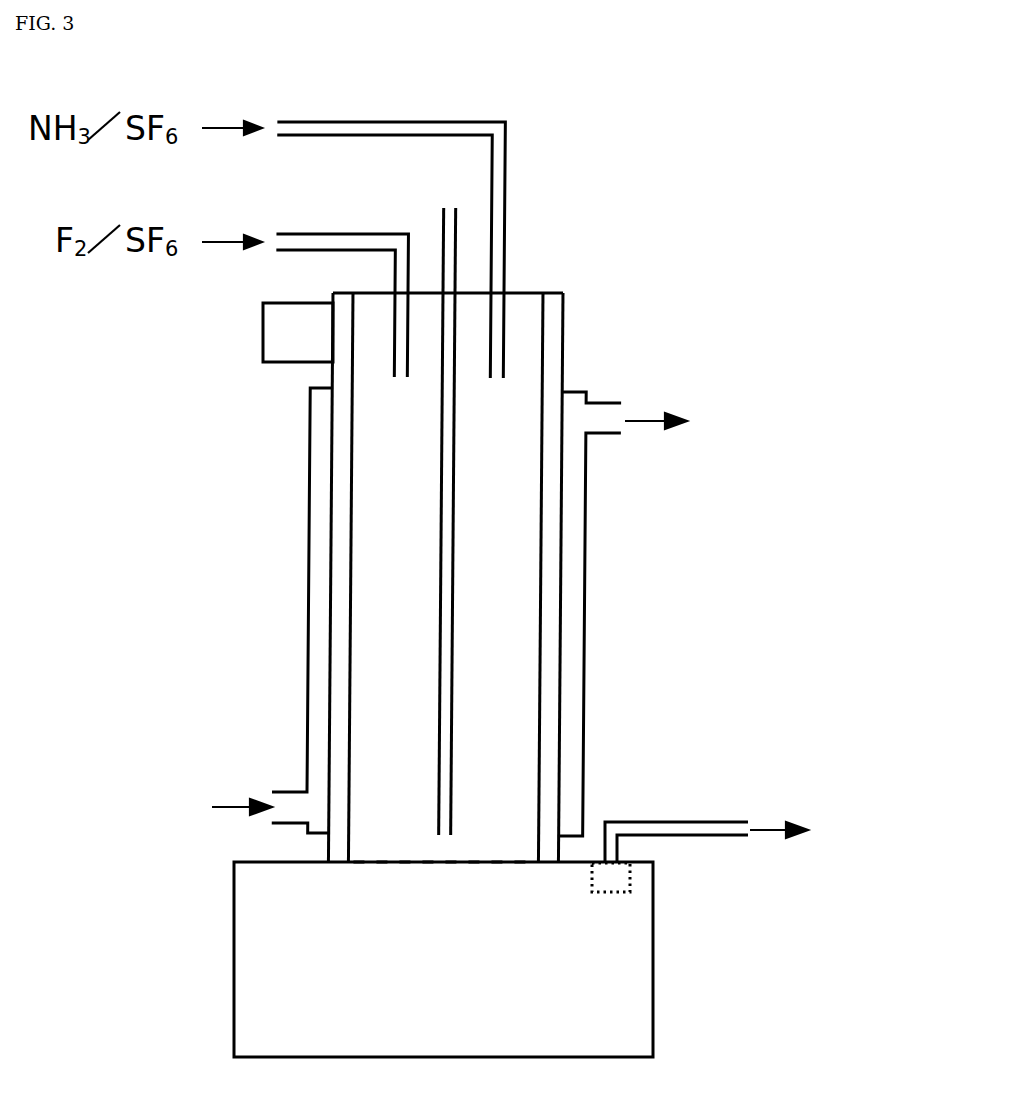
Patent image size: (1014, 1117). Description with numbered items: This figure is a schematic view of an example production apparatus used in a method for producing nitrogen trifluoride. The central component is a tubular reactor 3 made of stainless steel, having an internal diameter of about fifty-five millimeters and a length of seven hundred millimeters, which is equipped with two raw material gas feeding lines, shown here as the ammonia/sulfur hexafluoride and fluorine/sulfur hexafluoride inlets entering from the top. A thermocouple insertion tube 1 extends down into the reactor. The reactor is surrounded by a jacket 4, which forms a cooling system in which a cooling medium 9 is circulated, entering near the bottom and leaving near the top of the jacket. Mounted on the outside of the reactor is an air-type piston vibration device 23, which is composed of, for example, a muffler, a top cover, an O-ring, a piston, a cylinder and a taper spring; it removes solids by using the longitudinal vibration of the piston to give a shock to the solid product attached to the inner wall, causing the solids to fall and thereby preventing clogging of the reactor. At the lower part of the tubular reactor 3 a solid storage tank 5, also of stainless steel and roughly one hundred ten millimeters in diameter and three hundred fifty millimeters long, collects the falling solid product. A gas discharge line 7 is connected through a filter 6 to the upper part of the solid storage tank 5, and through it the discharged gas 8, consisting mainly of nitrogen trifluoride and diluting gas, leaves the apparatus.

The thermocouple insertion tube 1 is at (457, 232).
The tubular reactor 3 is at (563, 292).
The jacket 4 is at (585, 678).
The solid storage tank 5 is at (233, 943).
The filter 6 is at (628, 893).
The gas discharge line 7 is at (690, 822).
The discharged gas 8 is at (763, 832).
The cooling medium 9 is at (640, 422).
The air-type piston vibration device 23 is at (263, 335).